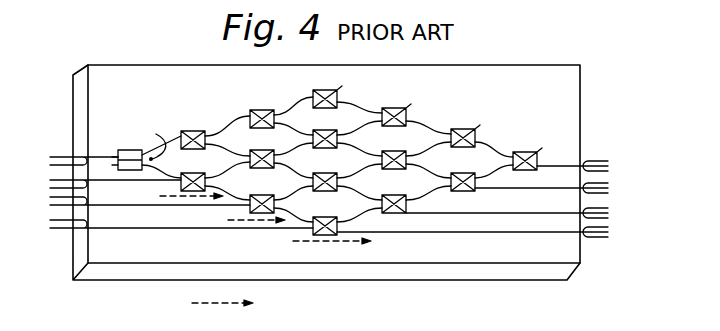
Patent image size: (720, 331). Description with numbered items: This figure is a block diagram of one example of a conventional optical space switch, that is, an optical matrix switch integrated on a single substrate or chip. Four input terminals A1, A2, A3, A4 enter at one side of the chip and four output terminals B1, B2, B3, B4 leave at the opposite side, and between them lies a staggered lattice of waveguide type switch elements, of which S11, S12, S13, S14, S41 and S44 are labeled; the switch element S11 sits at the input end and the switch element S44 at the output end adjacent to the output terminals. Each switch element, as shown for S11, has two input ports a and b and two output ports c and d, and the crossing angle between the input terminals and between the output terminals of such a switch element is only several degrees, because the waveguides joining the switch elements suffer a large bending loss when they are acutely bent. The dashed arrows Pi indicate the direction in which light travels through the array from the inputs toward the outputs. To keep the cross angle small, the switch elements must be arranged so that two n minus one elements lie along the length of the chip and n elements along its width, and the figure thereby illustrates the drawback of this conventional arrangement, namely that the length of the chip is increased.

The input optical switch S11 is at (133, 150).
The optical switch S12 is at (194, 131).
The optical switch S13 is at (261, 110).
The optical switch S14 is at (328, 91).
The optical switch S41 is at (328, 217).
The output optical switch S44 is at (526, 151).
The switch input port a is at (112, 150).
The switch input port b is at (114, 173).
The switch output port c is at (161, 146).
The switch output port d is at (161, 173).
The input port A1 is at (68, 157).
The input port A2 is at (99, 182).
The input port A3 is at (134, 204).
The input port A4 is at (165, 228).
The output port B1 is at (490, 231).
The output port B2 is at (522, 212).
The output port B3 is at (556, 187).
The output port B4 is at (587, 165).
The optical signal path Pi is at (231, 236).